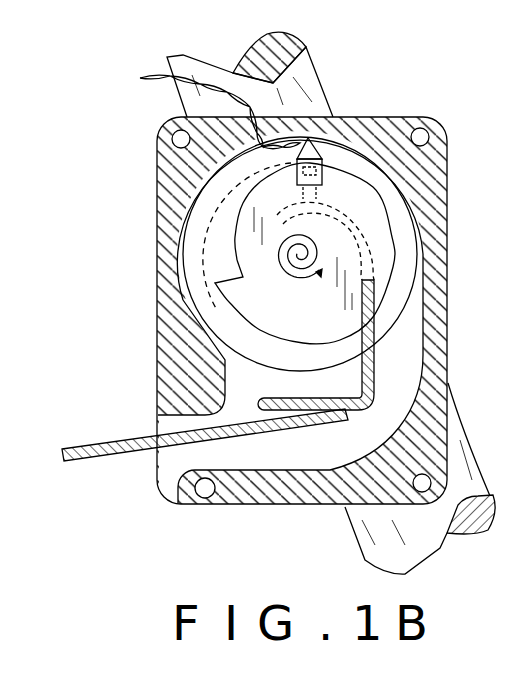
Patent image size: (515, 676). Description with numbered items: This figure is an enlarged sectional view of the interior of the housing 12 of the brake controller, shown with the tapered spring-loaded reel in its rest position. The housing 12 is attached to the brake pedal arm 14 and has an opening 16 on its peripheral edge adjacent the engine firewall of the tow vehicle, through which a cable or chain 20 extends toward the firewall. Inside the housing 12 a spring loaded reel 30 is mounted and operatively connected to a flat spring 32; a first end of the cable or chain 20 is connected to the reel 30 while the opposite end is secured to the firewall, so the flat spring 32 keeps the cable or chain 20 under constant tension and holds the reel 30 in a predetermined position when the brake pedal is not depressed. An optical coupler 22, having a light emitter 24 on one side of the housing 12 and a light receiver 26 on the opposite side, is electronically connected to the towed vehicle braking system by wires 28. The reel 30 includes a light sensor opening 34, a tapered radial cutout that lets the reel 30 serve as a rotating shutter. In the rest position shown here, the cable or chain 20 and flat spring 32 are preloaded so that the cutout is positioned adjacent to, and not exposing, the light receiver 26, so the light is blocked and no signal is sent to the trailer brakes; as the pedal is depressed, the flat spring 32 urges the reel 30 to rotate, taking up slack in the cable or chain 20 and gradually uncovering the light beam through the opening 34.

The housing 12 is at (427, 190).
The brake pedal arm 14 is at (280, 77).
The opening 16 is at (150, 467).
The cable or chain 20 is at (113, 441).
The optical coupler 22 is at (322, 145).
The light emitter 24 is at (337, 160).
The light receiver 26 is at (325, 198).
The wires 28 is at (143, 77).
The spring loaded reel 30 is at (220, 320).
The flat spring 32 is at (270, 258).
The light sensor opening 34 is at (226, 228).